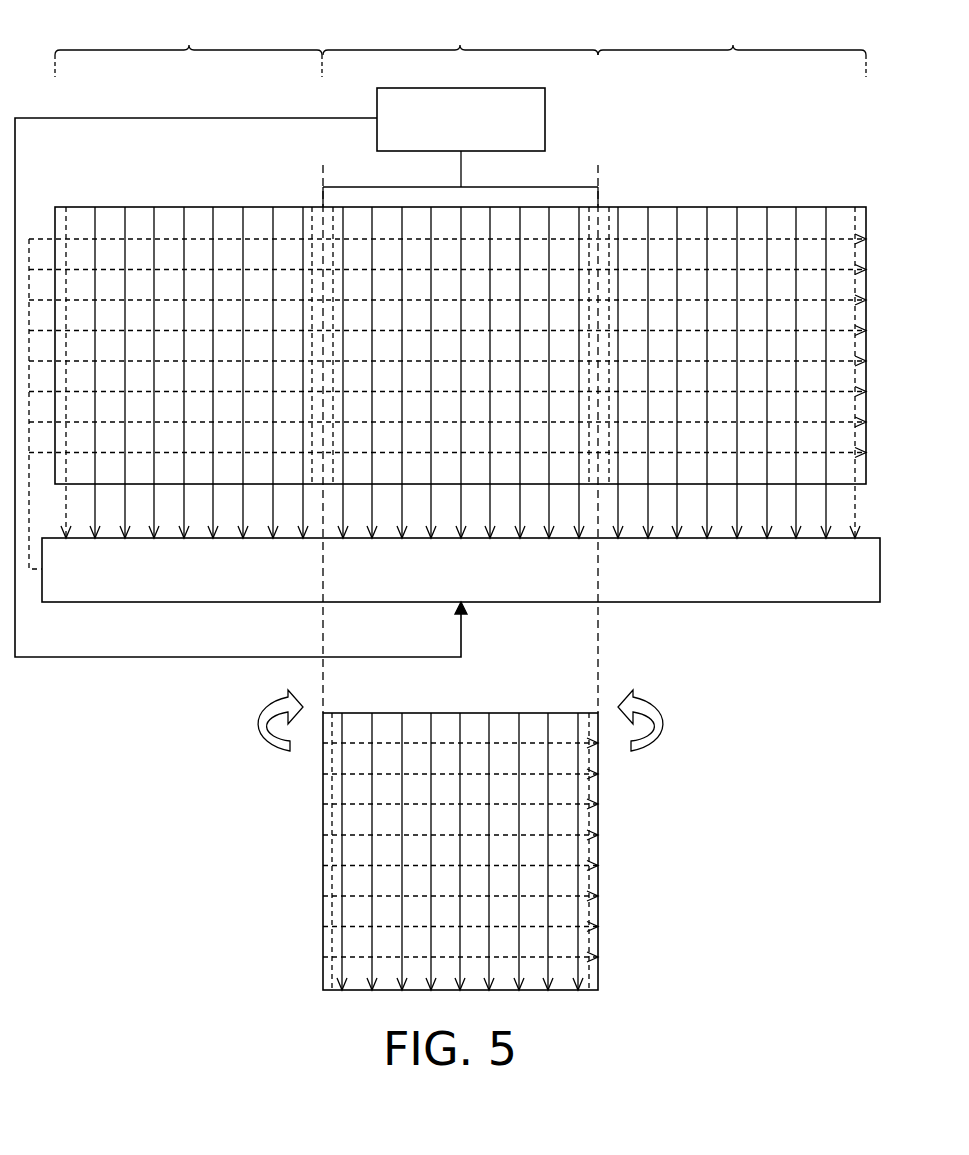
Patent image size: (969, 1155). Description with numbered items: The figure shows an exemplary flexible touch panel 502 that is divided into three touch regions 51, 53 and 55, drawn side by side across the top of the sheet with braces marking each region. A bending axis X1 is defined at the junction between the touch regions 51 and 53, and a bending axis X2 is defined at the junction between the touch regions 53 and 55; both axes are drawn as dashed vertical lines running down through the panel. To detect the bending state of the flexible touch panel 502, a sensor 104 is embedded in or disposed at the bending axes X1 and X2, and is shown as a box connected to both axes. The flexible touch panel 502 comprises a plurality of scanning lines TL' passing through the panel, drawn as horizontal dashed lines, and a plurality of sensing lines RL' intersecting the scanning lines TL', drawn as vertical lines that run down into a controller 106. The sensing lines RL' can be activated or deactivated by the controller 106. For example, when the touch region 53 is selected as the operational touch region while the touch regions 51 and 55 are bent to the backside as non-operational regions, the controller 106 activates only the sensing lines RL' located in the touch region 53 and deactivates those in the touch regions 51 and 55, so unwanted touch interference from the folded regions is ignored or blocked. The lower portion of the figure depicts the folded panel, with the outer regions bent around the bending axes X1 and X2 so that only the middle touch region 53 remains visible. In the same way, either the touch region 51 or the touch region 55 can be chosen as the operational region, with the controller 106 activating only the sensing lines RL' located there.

The touch region 51 is at (188, 46).
The touch region 53 is at (460, 35).
The touch region 55 is at (732, 46).
The sensor 104 is at (545, 118).
The controller 106 is at (405, 603).
The flexible touch panel 502 is at (443, 580).
The bending axis X1 is at (323, 426).
The bending axis X2 is at (598, 426).
The scanning lines TL' is at (443, 371).
The sensing lines RL' is at (460, 355).